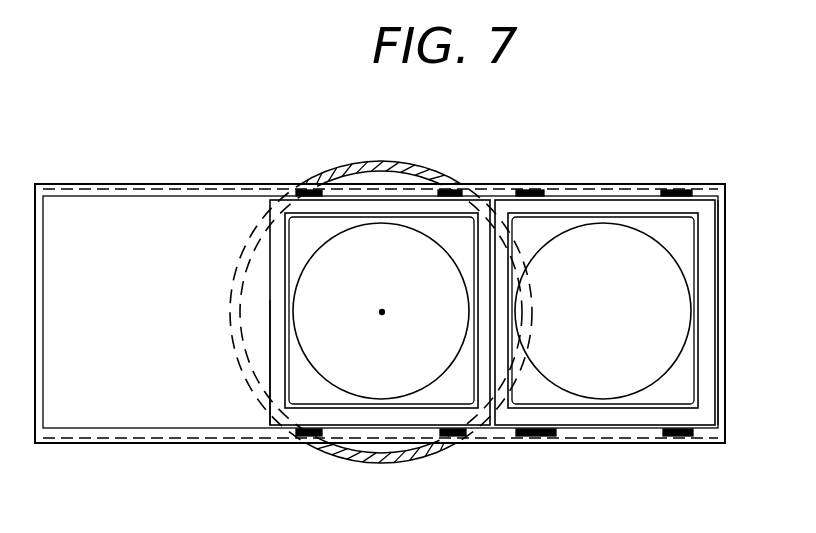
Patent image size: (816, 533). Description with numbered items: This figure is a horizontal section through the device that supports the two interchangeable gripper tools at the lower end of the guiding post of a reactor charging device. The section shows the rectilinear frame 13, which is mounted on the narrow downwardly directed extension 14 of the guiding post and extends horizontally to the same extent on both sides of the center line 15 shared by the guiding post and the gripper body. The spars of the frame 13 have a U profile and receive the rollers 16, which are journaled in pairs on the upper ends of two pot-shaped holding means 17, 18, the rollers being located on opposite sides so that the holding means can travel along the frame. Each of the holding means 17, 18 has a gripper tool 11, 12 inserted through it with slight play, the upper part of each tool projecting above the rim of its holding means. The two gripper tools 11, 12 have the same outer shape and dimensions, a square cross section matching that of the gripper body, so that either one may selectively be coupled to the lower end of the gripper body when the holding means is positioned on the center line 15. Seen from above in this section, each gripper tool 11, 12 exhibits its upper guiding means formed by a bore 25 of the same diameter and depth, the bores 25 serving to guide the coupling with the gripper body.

The gripper tool 11 is at (293, 240).
The gripper tool 12 is at (673, 232).
The rectilinear frame 13 is at (62, 184).
The extension of the guiding post 14 is at (322, 180).
The center line 15 is at (384, 311).
The rollers 16 is at (548, 188).
The holding means 17 is at (278, 344).
The holding means 18 is at (712, 256).
The bores 25 is at (320, 240).